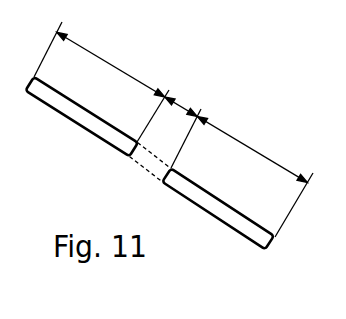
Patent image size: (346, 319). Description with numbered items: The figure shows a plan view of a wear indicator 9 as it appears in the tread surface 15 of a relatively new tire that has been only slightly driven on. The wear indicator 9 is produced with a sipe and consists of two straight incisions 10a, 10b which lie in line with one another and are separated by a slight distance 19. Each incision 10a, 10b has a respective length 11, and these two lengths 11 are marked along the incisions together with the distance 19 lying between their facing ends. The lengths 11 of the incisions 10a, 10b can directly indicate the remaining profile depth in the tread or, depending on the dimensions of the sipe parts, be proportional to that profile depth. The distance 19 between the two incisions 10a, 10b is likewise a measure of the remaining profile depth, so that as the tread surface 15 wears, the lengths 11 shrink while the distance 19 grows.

The straight incision 10a is at (97, 139).
The straight incision 10b is at (220, 222).
The length 11 is at (173, 129).
The wear indicator 9 is at (180, 91).
The distance 19 is at (185, 108).
The tread surface 15 is at (233, 114).